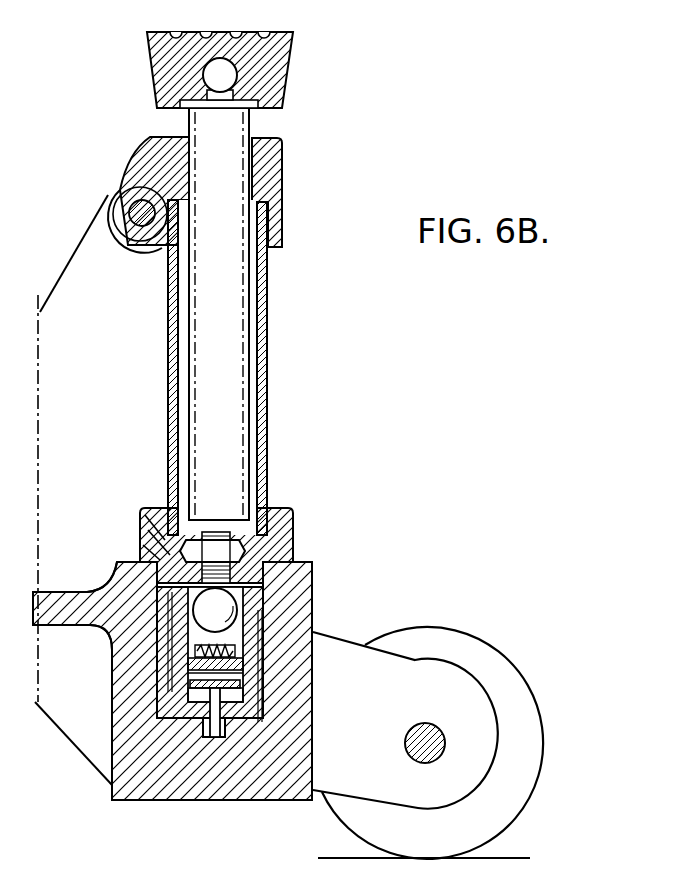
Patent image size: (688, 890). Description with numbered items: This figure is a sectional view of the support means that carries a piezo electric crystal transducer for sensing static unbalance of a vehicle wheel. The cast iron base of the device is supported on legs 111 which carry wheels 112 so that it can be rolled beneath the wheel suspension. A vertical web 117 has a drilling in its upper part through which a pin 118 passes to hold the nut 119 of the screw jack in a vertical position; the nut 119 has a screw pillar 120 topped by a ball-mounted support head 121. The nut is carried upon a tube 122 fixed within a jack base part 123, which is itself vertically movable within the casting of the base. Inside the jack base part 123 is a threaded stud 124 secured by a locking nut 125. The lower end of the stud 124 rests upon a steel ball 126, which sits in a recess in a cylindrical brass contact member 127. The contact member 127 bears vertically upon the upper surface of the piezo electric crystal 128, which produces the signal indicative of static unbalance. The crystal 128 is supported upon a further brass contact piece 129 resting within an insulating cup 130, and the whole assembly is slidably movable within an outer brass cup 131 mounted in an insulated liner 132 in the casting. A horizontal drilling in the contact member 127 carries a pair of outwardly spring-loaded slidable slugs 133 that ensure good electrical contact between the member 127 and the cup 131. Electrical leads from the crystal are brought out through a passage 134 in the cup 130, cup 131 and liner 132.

The legs 111 is at (357, 646).
The wheels 112 is at (477, 647).
The vertical web 117 is at (90, 242).
The pin 118 is at (142, 228).
The nut 119 is at (273, 178).
The screw pillar 120 is at (257, 124).
The ball-mounted support head 121 is at (275, 85).
The tube 122 is at (270, 305).
The jack base part 123 is at (167, 508).
The threaded stud 124 is at (180, 552).
The locking nut 125 is at (160, 535).
The steel ball 126 is at (118, 562).
The cylindrical brass contact member 127 is at (313, 608).
The piezo electric crystal 128 is at (262, 668).
The brass contact piece 129 is at (248, 690).
The insulating cup 130 is at (250, 700).
The outer brass cup 131 is at (245, 720).
The insulated liner 132 is at (240, 735).
The spring-loaded slidable slugs 133 is at (190, 653).
The passage for electrical leads 134 is at (215, 737).